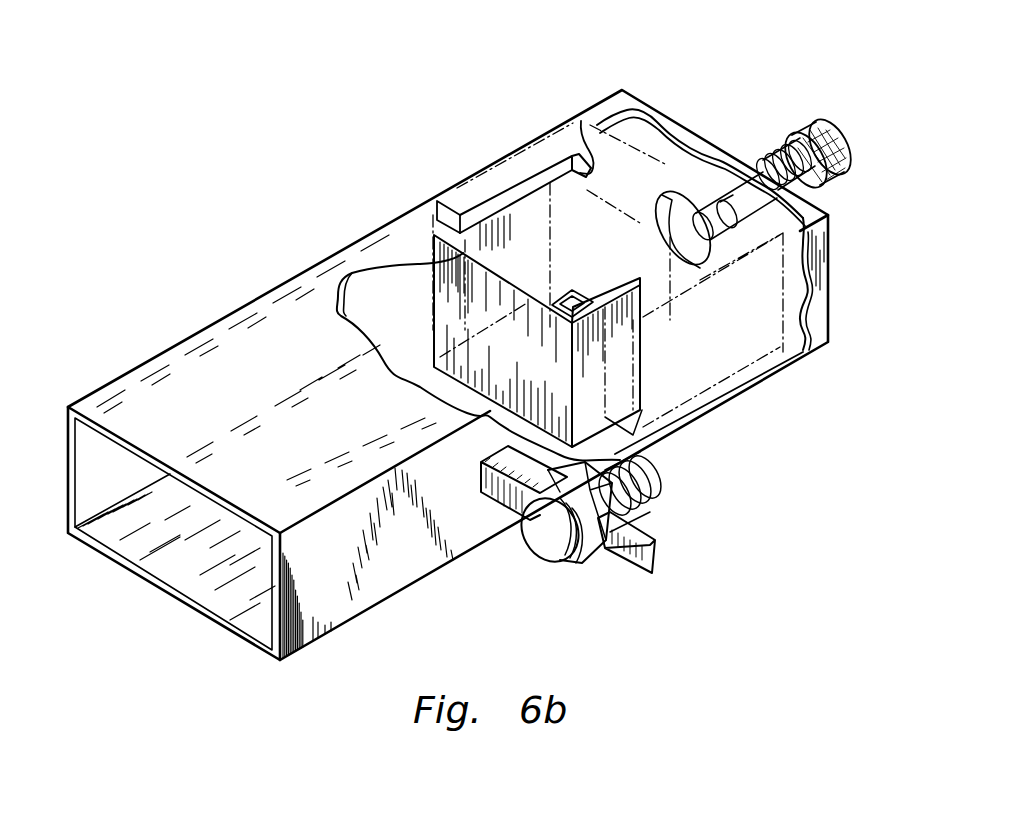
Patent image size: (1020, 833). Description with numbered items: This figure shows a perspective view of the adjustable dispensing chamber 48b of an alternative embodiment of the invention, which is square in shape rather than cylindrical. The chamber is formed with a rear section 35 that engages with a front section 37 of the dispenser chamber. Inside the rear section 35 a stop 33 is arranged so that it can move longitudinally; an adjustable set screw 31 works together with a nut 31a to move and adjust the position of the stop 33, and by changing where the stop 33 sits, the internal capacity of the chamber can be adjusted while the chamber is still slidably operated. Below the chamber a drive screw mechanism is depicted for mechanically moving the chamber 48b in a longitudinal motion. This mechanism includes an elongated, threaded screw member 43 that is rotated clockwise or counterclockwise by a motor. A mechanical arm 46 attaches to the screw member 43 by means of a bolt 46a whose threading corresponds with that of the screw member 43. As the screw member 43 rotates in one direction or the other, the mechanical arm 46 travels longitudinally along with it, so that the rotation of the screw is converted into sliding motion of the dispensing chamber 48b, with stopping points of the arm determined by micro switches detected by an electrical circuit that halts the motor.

The dispensing chamber 48b is at (510, 117).
The rear section 35 is at (743, 330).
The front section 37 is at (440, 238).
The stop 33 is at (678, 220).
The nut 31a is at (745, 200).
The adjustable set screw 31 is at (833, 127).
The screw member 43 is at (640, 487).
The mechanical arm 46 is at (517, 497).
The bolt 46a is at (580, 563).